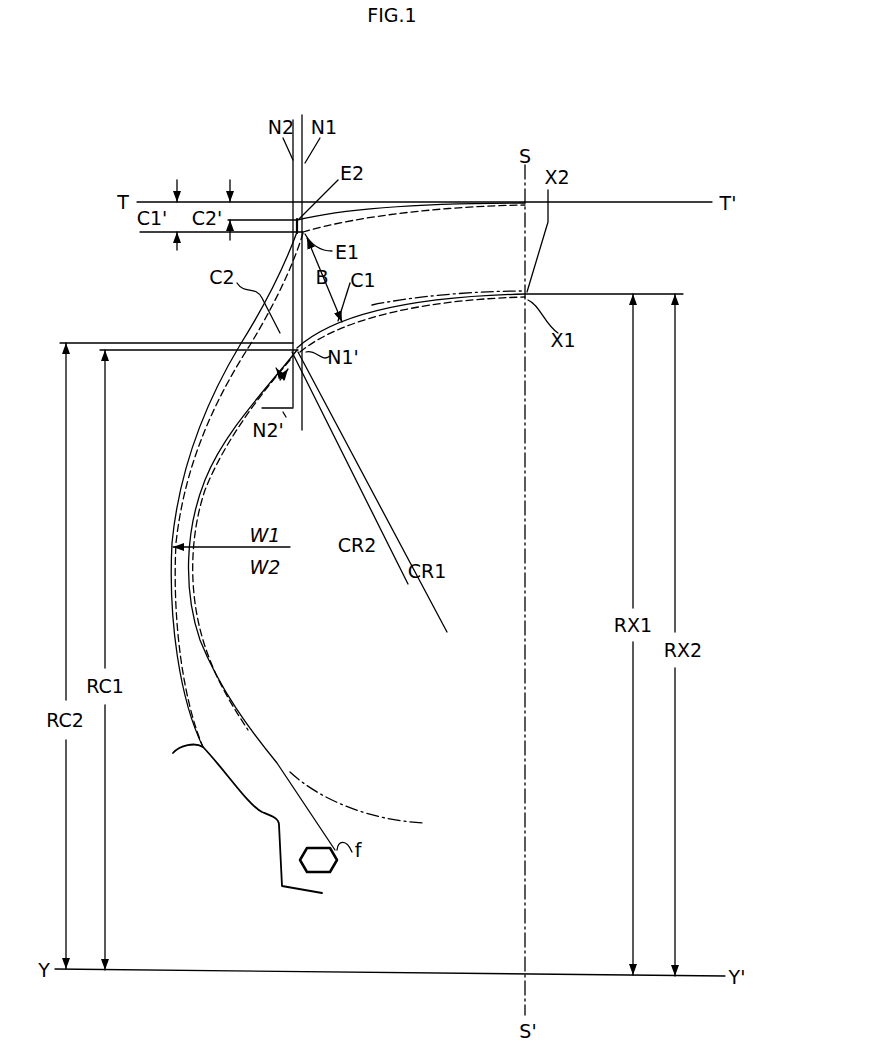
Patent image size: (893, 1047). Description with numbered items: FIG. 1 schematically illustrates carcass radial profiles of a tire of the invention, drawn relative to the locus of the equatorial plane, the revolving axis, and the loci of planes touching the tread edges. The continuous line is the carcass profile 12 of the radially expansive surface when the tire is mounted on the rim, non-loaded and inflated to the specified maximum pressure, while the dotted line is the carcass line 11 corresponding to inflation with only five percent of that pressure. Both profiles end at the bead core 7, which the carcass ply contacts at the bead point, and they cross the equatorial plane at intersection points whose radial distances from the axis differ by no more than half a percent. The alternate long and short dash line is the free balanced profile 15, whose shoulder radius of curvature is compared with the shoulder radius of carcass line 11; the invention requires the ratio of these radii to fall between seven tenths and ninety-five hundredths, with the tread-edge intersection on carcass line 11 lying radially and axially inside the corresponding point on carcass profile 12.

The bead core 7 is at (316, 874).
The carcass line (profile at 5% of maximum pressure) 11 is at (396, 316).
The carcass profile (at specified maximum pressure) 12 is at (245, 388).
The free balanced profile 15 is at (398, 300).